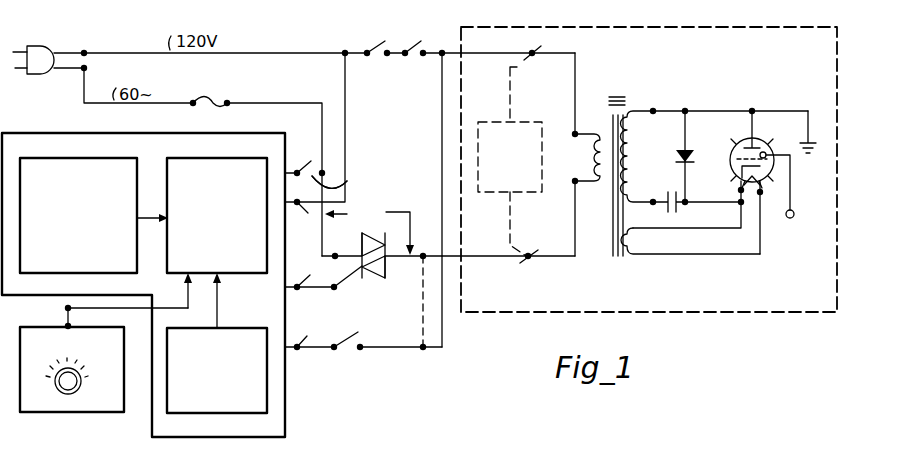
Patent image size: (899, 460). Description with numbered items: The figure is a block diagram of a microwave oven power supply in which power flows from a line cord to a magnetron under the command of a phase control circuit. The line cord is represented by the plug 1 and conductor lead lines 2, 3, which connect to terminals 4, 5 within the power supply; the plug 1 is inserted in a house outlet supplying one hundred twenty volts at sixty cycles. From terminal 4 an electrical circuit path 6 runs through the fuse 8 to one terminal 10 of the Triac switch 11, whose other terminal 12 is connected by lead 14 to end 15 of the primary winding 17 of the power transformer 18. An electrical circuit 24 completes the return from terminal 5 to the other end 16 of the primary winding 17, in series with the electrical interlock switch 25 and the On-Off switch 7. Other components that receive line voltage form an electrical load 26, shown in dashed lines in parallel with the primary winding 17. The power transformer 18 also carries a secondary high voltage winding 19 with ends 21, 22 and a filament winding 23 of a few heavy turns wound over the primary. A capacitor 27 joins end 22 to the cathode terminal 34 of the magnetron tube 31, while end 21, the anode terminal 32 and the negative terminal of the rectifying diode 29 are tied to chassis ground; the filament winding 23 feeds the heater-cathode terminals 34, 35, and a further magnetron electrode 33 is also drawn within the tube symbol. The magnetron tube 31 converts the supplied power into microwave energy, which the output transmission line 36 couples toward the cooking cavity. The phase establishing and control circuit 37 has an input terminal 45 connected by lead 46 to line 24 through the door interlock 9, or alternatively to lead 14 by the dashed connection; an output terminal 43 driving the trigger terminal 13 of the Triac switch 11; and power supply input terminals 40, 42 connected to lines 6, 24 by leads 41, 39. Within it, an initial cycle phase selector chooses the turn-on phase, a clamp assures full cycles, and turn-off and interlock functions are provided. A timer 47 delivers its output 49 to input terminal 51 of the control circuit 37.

The plug 1 is at (40, 46).
The conductor lead line 2 is at (68, 72).
The conductor lead line 3 is at (66, 51).
The terminal 4 is at (87, 67).
The terminal 5 is at (89, 50).
The electrical circuit path 6 is at (272, 103).
The On-Off switch 7 is at (376, 46).
The fuse 8 is at (208, 100).
The door interlock 9 is at (350, 340).
The terminal of Triac switch 10 is at (337, 251).
The Triac switch 11 is at (388, 238).
The terminal of Triac switch 12 is at (422, 260).
The trigger terminal 13 is at (335, 289).
The lead 14 is at (477, 262).
The end of primary winding 15 is at (574, 183).
The end of primary winding 16 is at (574, 136).
The primary winding 17 is at (594, 158).
The power transformer 18 is at (614, 259).
The secondary high voltage winding 19 is at (625, 152).
The end of secondary winding 21 is at (653, 110).
The end of secondary winding 22 is at (660, 192).
The filament winding 23 is at (635, 242).
The electrical circuit 24 is at (287, 53).
The electrical interlock switch 25 is at (415, 46).
The electrical load 26 is at (520, 194).
The capacitor 27 is at (667, 211).
The rectifying diode 29 is at (695, 156).
The magnetron tube 31 is at (739, 140).
The anode terminal 32 is at (761, 138).
The grid 33 is at (735, 169).
The cathode terminal 34 is at (738, 200).
The heater-cathode terminal 35 is at (776, 196).
The output transmission line 36 is at (792, 197).
The phase establishing and control circuit 37 is at (285, 405).
The lead 39 is at (345, 135).
The power supply input terminal 40 is at (301, 168).
The lead 41 is at (336, 184).
The power supply input terminal 42 is at (300, 218).
The output terminal 43 is at (303, 287).
The input terminal 45 is at (302, 345).
The lead 46 is at (378, 347).
The timer 47 is at (67, 414).
The timer output 49 is at (66, 326).
The input terminal 51 is at (68, 307).